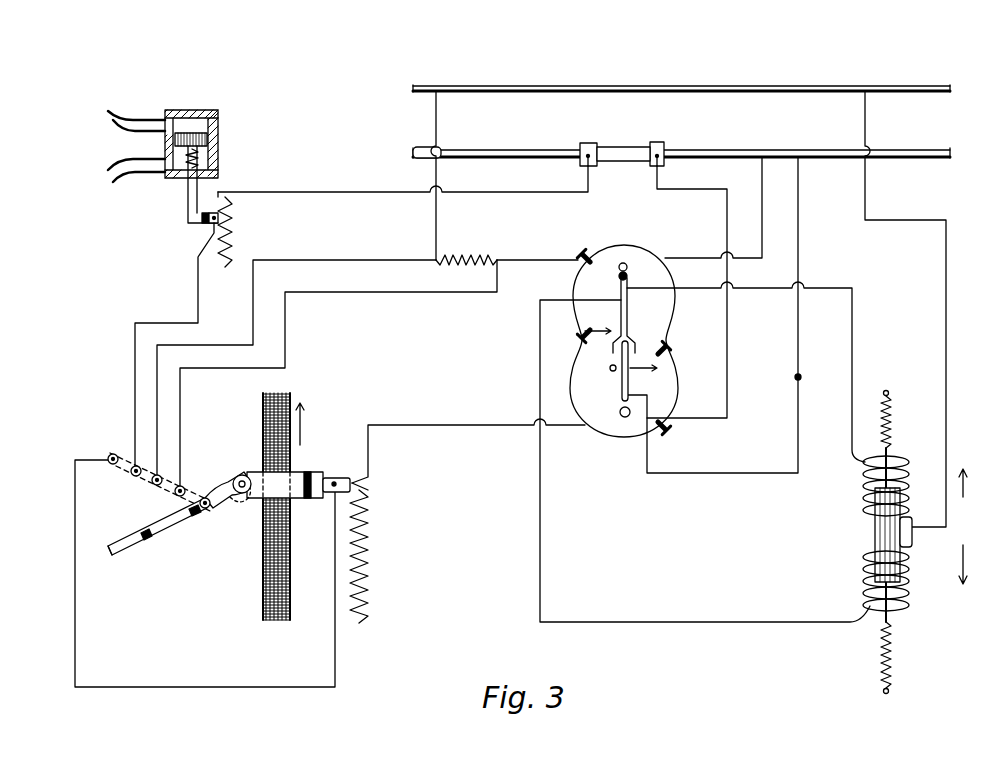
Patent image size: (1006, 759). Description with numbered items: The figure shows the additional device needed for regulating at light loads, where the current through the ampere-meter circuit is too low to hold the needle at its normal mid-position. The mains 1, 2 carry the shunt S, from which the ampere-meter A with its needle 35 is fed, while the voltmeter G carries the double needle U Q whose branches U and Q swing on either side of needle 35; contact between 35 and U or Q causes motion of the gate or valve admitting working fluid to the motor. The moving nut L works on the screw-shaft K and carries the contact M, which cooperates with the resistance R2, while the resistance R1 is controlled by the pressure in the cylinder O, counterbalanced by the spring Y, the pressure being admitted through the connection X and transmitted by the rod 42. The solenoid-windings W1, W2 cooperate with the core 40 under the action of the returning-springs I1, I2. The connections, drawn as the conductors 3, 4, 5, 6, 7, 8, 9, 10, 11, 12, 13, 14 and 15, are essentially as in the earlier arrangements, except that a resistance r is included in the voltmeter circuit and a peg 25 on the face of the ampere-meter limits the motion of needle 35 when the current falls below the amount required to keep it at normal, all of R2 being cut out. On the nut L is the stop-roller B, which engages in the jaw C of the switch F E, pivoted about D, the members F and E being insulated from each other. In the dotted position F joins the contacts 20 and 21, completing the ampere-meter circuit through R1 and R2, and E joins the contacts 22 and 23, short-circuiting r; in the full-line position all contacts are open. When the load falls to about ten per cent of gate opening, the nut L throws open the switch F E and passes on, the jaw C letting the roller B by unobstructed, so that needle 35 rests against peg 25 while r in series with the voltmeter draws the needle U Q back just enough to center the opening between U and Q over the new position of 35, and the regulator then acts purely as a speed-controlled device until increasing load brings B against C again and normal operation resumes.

The main 1 is at (640, 84).
The main 2 is at (703, 151).
The conductor 3 is at (690, 189).
The conductor 4 is at (452, 422).
The conductor 5 is at (76, 533).
The conductor 6 is at (197, 278).
The conductor 7 is at (311, 192).
The conductor 8 is at (436, 128).
The conductor 9 is at (914, 309).
The conductor 10 is at (540, 375).
The conductor 11 is at (798, 211).
The conductor 12 is at (743, 259).
The conductor 13 is at (533, 260).
The conductor 14 is at (356, 260).
The conductor 15 is at (375, 292).
The contact 20 is at (107, 454).
The contact 21 is at (124, 483).
The contact 22 is at (148, 496).
The contact 23 is at (186, 487).
The peg 25 is at (610, 368).
The ampere-meter needle 35 is at (621, 387).
The core 40 is at (929, 535).
The rod 42 is at (185, 197).
The cylinder O is at (204, 144).
The pipe connection X is at (170, 141).
The spring Y is at (203, 154).
The resistance R1 is at (241, 229).
The resistance R2 is at (377, 553).
The resistance r is at (466, 248).
The shunt S is at (614, 146).
The voltmeter G is at (742, 361).
The voltmeter needle branch U is at (620, 280).
The voltmeter needle branch Q is at (634, 313).
The ampere-meter A is at (621, 342).
The stop-roller B is at (241, 474).
The contact M is at (322, 473).
The moving nut L is at (253, 505).
The jaw C is at (228, 512).
The pivot D is at (204, 510).
The switch member E is at (167, 539).
The switch member F is at (117, 555).
The screw-shaft K is at (292, 560).
The returning-spring I1 is at (890, 416).
The returning-spring I2 is at (905, 658).
The solenoid-winding W1 is at (905, 486).
The solenoid-winding W2 is at (906, 581).